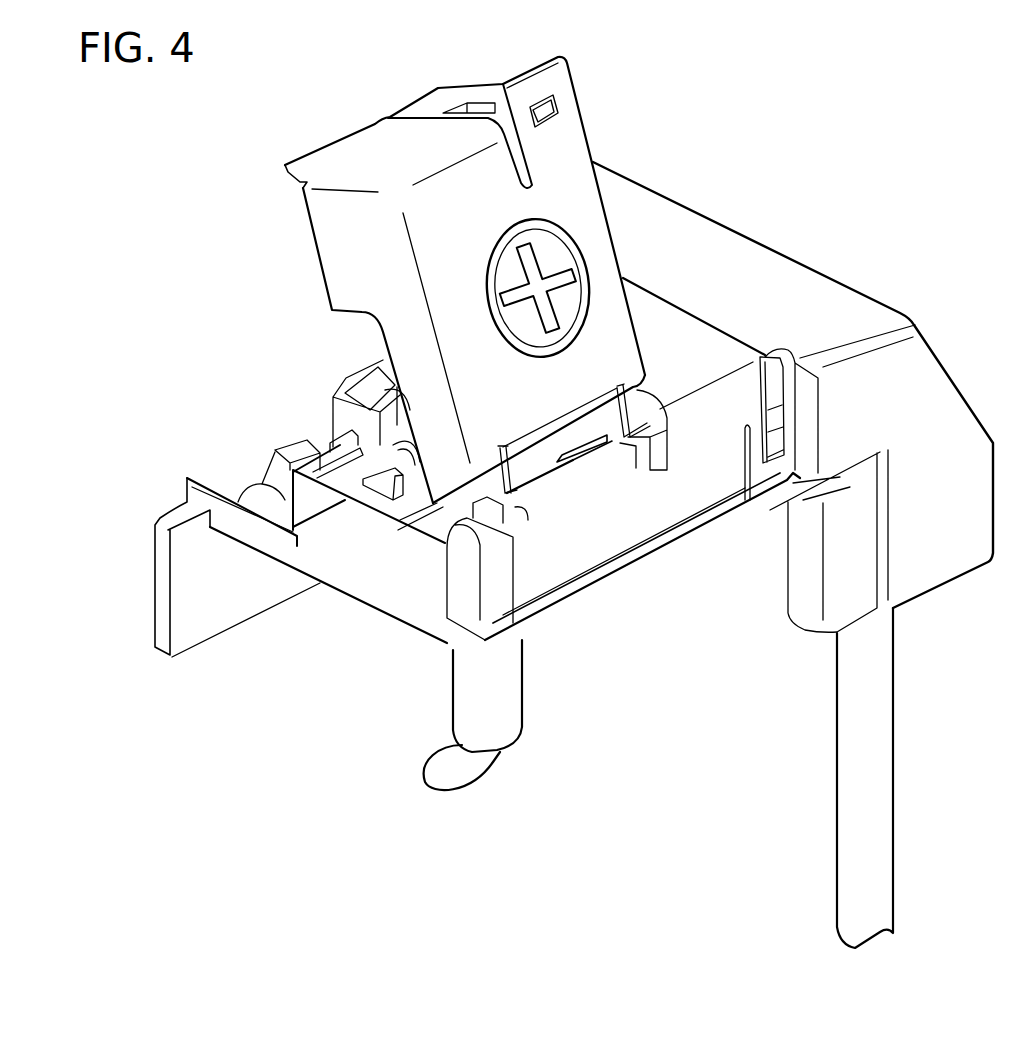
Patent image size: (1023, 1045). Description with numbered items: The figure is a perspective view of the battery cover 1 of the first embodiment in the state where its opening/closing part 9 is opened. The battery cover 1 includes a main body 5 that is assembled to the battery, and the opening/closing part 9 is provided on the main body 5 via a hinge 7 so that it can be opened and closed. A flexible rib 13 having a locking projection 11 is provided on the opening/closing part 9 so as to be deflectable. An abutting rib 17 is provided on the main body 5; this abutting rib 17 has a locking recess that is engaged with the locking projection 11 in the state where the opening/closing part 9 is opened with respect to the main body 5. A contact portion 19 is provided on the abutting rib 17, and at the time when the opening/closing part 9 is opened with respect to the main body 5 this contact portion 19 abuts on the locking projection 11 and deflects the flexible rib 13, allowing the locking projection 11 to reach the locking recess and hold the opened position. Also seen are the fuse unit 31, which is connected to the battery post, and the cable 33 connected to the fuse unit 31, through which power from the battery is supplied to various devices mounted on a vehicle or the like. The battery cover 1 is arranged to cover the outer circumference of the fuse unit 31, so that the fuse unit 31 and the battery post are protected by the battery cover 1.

The battery cover 1 is at (676, 155).
The main body 5 is at (686, 335).
The hinge 7 is at (568, 462).
The opening/closing part 9 is at (444, 192).
The locking projection 11 is at (428, 503).
The flexible rib 13 is at (622, 440).
The abutting rib 17 is at (703, 510).
The contact portion 19 is at (558, 463).
The fuse unit 31 is at (300, 410).
The cable 33 is at (475, 686).